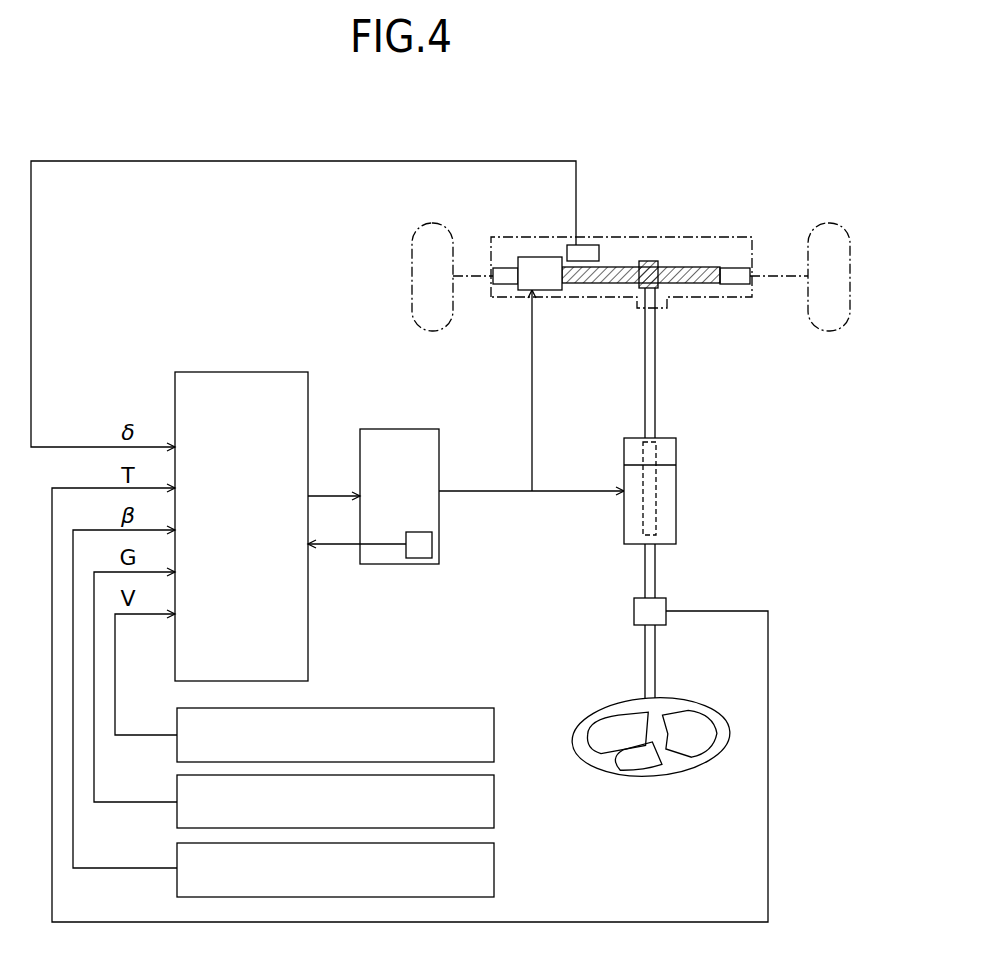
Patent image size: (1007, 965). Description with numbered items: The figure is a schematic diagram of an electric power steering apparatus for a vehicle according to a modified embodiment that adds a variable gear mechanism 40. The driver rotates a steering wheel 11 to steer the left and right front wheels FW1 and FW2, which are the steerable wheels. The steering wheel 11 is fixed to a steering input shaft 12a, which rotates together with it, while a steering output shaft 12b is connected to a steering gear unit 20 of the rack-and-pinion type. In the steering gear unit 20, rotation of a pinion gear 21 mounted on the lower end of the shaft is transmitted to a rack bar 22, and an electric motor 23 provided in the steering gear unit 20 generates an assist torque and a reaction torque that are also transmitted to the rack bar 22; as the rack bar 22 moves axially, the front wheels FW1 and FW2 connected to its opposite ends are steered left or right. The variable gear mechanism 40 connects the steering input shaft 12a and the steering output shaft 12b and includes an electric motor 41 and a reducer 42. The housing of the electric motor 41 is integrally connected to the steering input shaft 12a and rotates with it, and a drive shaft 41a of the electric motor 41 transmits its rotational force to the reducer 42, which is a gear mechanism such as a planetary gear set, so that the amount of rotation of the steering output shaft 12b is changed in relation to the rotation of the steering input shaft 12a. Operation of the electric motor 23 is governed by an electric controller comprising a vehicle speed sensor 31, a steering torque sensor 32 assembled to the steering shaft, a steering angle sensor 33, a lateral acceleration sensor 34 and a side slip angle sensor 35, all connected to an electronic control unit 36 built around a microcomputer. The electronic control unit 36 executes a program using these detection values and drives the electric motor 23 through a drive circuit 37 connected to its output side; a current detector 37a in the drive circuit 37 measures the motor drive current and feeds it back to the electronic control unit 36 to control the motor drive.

The steering wheel 11 is at (670, 772).
The steering input shaft 12a is at (655, 570).
The steering output shaft 12b is at (645, 390).
The steering gear unit 20 is at (621, 263).
The pinion gear 21 is at (658, 287).
The rack bar 22 is at (678, 267).
The electric motor 23 is at (552, 290).
The vehicle speed sensor 31 is at (494, 735).
The steering torque sensor 32 is at (634, 610).
The steering angle sensor 33 is at (594, 236).
The lateral acceleration sensor 34 is at (494, 802).
The side slip angle sensor 35 is at (494, 870).
The electronic control unit 36 is at (267, 372).
The drive circuit 37 is at (400, 429).
The current detector 37a is at (432, 544).
The variable gear mechanism 40 is at (654, 471).
The electric motor 41 is at (676, 531).
The drive shaft 41a is at (643, 533).
The reducer 42 is at (627, 438).
The right front wheel FW1 is at (829, 223).
The left front wheel FW2 is at (433, 223).